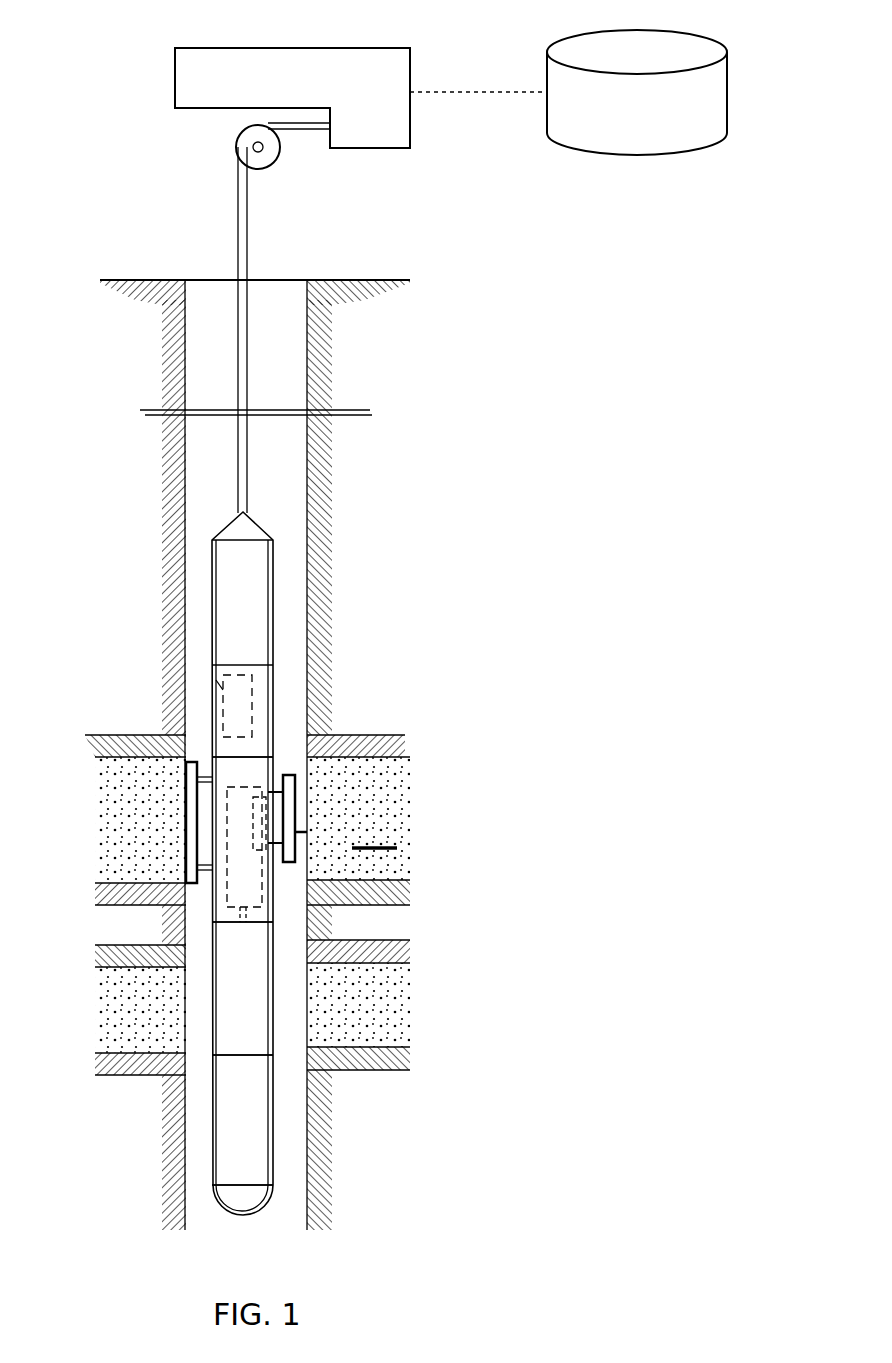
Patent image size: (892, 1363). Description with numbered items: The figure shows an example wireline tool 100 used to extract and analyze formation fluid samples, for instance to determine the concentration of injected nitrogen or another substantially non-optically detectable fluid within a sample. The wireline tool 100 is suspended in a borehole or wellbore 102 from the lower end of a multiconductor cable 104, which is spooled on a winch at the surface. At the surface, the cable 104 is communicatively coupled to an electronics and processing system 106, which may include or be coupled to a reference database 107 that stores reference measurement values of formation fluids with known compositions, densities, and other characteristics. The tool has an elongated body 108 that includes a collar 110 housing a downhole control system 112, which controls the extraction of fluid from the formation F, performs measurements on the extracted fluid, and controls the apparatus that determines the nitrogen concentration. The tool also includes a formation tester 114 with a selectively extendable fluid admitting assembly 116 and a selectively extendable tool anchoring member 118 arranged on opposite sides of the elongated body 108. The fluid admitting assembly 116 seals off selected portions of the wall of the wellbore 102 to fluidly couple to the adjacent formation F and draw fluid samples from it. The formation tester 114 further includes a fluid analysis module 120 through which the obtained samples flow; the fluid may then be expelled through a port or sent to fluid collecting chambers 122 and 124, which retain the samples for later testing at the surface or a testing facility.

The wireline tool 100 is at (328, 688).
The borehole or wellbore 102 is at (305, 513).
The multiconductor cable 104 is at (248, 318).
The electronics and processing system 106 is at (175, 48).
The reference database 107 is at (547, 52).
The elongated body 108 is at (235, 628).
The collar 110 is at (260, 700).
The downhole control system 112 is at (215, 686).
The formation tester 114 is at (225, 768).
The selectively extendable fluid admitting assembly 116 is at (285, 818).
The selectively extendable tool anchoring member 118 is at (192, 840).
The fluid analysis module 120 is at (230, 812).
The fluid collecting chamber 122 is at (232, 990).
The fluid collecting chamber 124 is at (242, 1130).